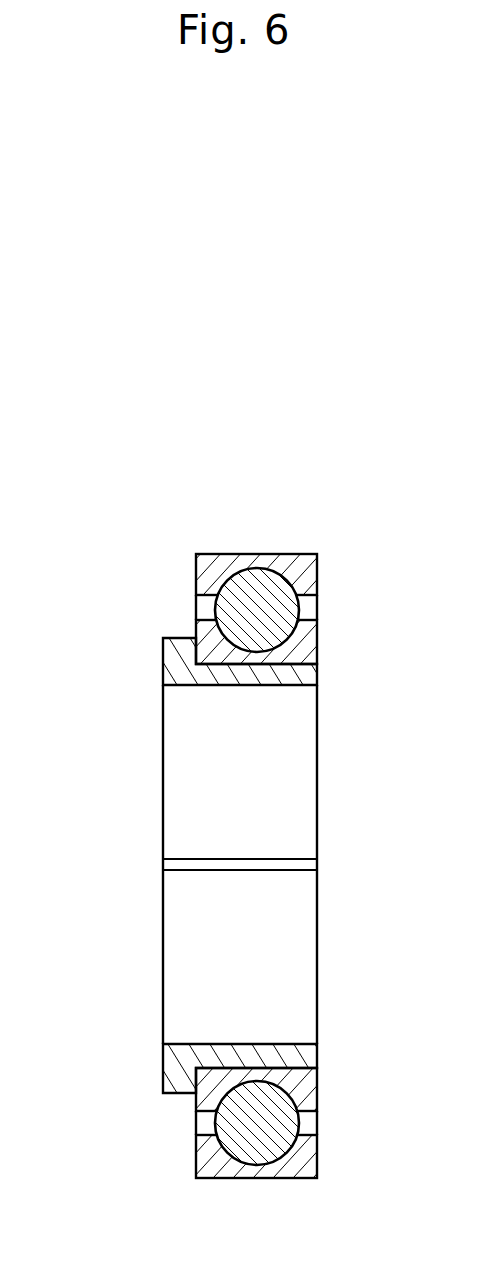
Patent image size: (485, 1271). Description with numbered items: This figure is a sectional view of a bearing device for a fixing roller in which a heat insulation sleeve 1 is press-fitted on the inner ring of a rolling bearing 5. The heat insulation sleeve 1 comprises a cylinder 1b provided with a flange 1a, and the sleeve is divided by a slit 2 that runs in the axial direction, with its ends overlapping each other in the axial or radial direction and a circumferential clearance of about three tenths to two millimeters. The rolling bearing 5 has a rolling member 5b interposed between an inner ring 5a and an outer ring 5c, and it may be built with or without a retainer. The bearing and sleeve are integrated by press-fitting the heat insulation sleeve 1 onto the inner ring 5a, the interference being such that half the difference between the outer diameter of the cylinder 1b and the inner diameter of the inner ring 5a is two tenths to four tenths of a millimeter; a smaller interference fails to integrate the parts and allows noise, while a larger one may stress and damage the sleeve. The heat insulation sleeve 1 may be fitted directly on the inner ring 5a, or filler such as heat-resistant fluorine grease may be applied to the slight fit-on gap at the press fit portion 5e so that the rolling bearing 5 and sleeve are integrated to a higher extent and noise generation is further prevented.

The heat insulation sleeve 1 is at (176, 865).
The flange 1a is at (175, 660).
The cylinder 1b is at (243, 680).
The slit 2 is at (163, 868).
The rolling bearing 5 is at (328, 609).
The inner ring 5a is at (302, 643).
The rolling member 5b is at (282, 608).
The outer ring 5c is at (302, 568).
The press fit portion 5e is at (317, 1068).